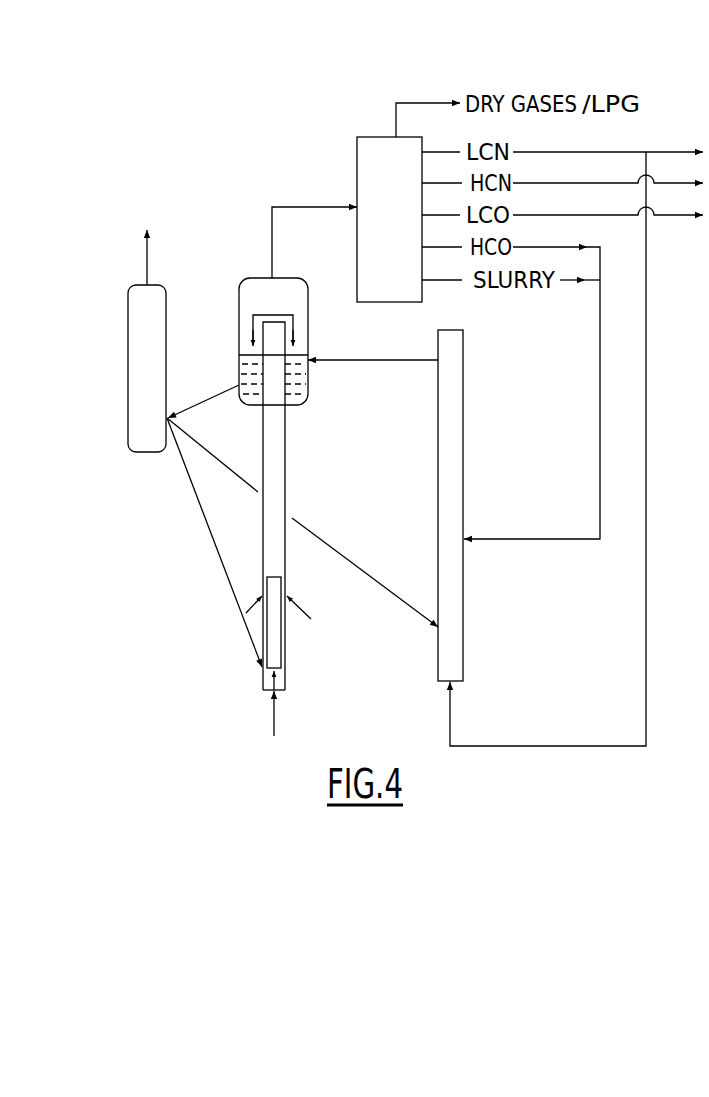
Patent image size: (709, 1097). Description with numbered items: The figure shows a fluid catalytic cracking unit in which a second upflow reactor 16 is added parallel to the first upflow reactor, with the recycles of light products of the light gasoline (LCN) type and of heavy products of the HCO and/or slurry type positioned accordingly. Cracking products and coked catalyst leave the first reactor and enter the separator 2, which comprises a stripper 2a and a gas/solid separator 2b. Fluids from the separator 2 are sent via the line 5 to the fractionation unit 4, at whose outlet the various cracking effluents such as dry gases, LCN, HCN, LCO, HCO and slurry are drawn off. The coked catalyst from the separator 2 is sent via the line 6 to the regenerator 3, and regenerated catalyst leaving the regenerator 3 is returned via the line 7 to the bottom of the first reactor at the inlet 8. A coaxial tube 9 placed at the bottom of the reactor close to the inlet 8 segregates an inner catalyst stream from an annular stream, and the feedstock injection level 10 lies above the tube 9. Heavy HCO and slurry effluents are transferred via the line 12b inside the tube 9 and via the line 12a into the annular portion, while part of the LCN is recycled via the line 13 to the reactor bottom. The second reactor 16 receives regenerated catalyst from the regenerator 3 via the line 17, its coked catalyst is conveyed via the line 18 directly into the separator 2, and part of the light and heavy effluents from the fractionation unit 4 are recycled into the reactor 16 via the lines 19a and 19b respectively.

The separator 2 is at (255, 278).
The stripper 2a is at (306, 388).
The gas/solid separator 2b is at (273, 314).
The regenerator 3 is at (128, 373).
The fractionation unit 4 is at (385, 137).
The line 5 is at (328, 205).
The line 6 is at (195, 406).
The line 7 is at (204, 515).
The inlet 8 is at (262, 682).
The coaxial tube 9 is at (272, 575).
The feedstock injection level 10 is at (276, 548).
The line 12a is at (298, 606).
The line 12b is at (285, 680).
The line 13 is at (275, 718).
The second upflow reactor 16 is at (438, 437).
The line 17 is at (377, 579).
The line 18 is at (375, 360).
The line 19a is at (646, 492).
The line 19b is at (600, 458).